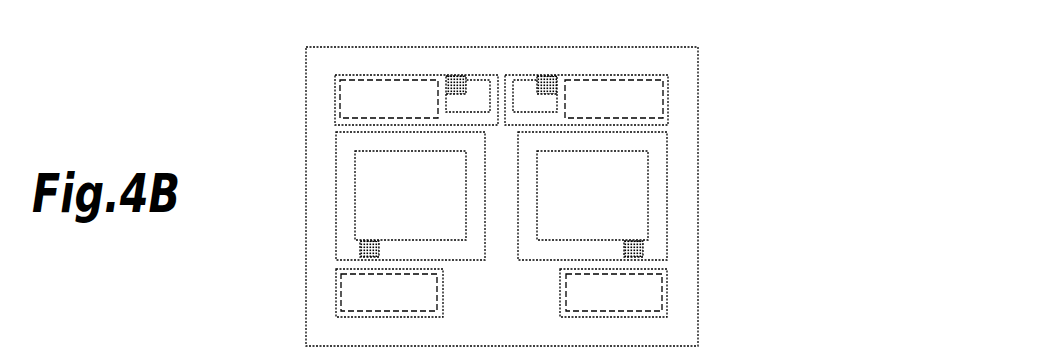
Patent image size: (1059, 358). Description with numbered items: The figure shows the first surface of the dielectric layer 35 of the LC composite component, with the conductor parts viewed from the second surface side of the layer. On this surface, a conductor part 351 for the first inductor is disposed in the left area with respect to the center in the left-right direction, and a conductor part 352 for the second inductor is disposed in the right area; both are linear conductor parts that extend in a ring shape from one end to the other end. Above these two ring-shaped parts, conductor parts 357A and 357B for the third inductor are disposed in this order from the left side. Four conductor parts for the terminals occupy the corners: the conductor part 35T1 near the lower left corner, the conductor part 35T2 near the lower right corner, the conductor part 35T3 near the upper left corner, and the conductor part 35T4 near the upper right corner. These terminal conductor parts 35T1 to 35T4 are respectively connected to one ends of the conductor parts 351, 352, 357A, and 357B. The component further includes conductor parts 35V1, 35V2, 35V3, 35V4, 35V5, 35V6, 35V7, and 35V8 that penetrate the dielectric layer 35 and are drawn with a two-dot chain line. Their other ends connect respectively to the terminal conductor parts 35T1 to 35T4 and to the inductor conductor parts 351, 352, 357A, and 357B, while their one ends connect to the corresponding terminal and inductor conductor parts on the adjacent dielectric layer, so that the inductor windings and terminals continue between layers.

The dielectric layer 35 is at (700, 54).
The conductor part for the inductor 11 351 is at (336, 192).
The conductor part for the inductor 12 352 is at (667, 193).
The conductor part for the inductor 17 357A is at (480, 78).
The conductor part for the inductor 17 357B is at (523, 78).
The conductor part for the terminal 35T1 is at (336, 286).
The conductor part for the terminal 35T2 is at (667, 285).
The conductor part for the terminal 35T3 is at (335, 93).
The conductor part for the terminal 35T4 is at (668, 94).
The conductor part penetrating the dielectric layer 35V1 is at (341, 303).
The conductor part penetrating the dielectric layer 35V2 is at (662, 305).
The conductor part penetrating the dielectric layer 35V3 is at (340, 107).
The conductor part penetrating the dielectric layer 35V4 is at (663, 108).
The conductor part penetrating the dielectric layer 35V5 is at (360, 250).
The conductor part penetrating the dielectric layer 35V6 is at (644, 250).
The conductor part penetrating the dielectric layer 35V7 is at (457, 75).
The conductor part penetrating the dielectric layer 35V8 is at (547, 75).